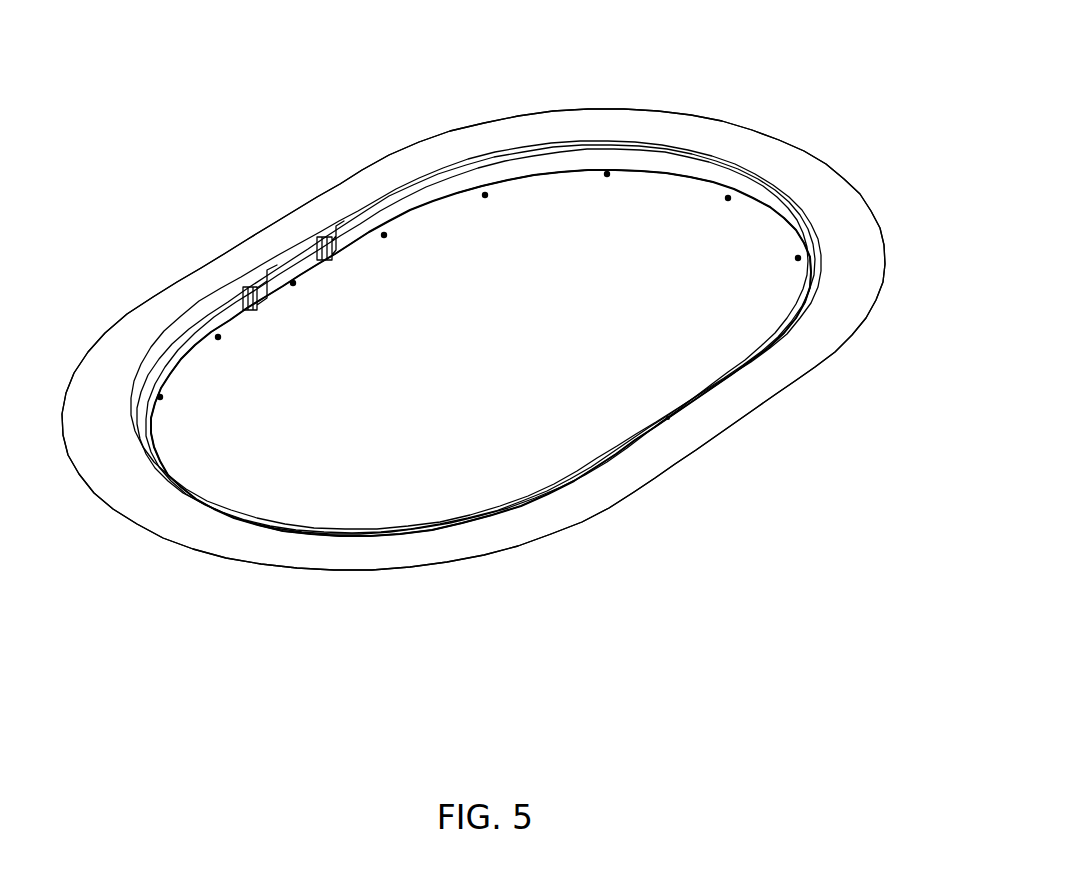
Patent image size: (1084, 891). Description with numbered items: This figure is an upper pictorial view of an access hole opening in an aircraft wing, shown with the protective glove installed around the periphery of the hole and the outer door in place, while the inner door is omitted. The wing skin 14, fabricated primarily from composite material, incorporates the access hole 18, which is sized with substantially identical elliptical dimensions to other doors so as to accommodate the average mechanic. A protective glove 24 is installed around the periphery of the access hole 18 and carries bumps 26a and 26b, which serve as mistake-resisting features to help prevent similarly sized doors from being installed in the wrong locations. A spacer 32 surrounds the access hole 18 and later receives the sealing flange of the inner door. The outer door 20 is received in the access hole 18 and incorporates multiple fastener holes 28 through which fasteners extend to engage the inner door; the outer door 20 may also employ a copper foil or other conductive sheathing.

The wing skin 14 is at (808, 122).
The access hole 18 is at (223, 291).
The outer door 20 is at (458, 255).
The protective glove 24 is at (517, 167).
The bump 26a is at (262, 252).
The bump 26b is at (335, 243).
The fastener holes 28 is at (727, 198).
The spacer 32 is at (217, 537).